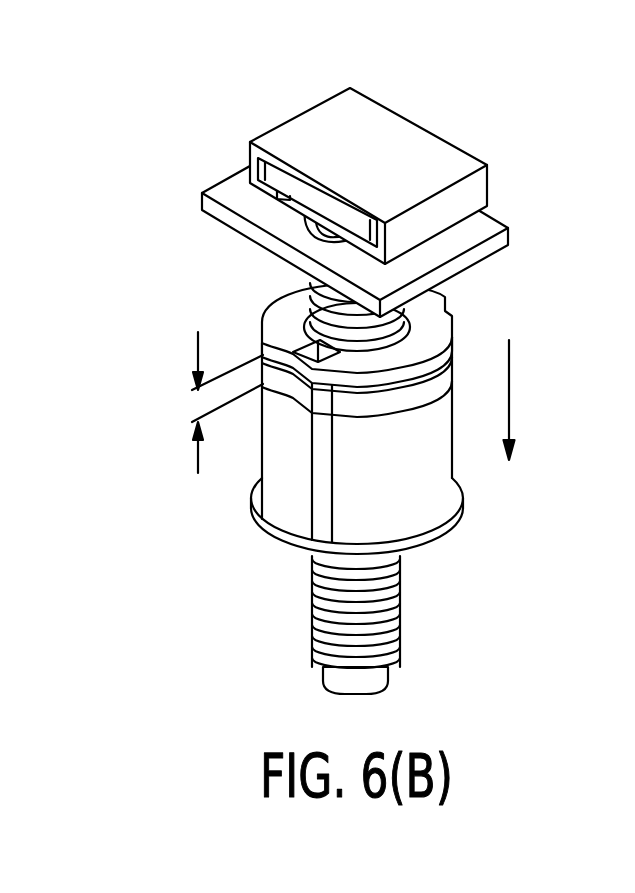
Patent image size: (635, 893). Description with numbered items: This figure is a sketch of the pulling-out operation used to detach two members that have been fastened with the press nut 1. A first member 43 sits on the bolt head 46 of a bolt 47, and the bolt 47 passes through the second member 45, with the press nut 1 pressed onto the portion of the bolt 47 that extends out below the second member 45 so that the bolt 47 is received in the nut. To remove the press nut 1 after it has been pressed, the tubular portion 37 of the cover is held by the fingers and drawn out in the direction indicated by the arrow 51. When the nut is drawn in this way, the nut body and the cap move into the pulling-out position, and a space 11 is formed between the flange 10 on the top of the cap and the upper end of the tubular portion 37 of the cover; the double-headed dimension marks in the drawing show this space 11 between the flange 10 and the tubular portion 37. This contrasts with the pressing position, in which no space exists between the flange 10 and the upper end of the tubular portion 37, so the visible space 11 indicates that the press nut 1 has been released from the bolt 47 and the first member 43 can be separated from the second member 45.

The press nut 1 is at (468, 327).
The flange 10 is at (282, 320).
The space 11 is at (193, 402).
The tubular portion 37 is at (427, 433).
The first member 43 is at (422, 155).
The second member 45 is at (252, 207).
The bolt head 46 is at (280, 176).
The bolt 47 is at (378, 615).
The arrow 51 is at (509, 403).